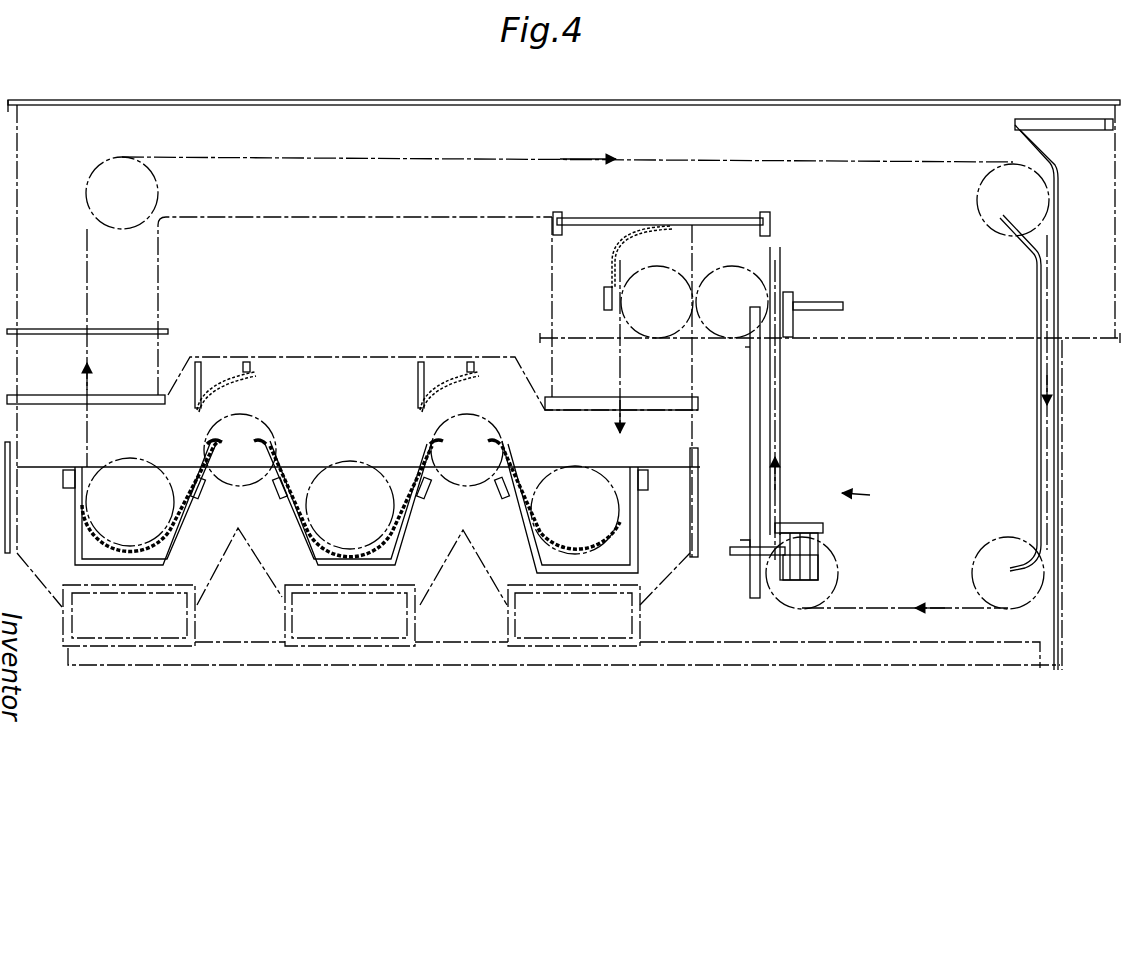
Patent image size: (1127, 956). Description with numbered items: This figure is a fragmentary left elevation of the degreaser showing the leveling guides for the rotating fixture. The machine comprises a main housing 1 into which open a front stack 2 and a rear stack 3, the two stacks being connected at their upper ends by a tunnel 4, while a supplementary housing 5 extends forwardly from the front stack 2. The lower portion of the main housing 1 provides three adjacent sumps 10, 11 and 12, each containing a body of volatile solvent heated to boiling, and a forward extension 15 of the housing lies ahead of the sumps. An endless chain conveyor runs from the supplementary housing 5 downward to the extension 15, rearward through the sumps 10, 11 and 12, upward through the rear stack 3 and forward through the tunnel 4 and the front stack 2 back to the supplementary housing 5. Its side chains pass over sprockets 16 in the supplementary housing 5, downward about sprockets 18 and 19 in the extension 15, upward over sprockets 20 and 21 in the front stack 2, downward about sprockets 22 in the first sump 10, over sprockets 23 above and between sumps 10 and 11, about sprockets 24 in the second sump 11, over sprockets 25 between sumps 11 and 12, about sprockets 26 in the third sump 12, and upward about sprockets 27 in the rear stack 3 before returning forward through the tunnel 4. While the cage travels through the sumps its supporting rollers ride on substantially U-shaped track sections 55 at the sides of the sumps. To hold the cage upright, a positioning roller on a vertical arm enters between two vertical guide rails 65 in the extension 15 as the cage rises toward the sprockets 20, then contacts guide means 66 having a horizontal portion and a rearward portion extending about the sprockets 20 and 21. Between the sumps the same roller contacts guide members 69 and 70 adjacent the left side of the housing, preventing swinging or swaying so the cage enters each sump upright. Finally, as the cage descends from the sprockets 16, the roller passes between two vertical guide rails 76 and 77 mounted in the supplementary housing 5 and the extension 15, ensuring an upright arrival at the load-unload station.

The main housing 1 is at (372, 357).
The front stack 2 is at (552, 297).
The rear stack 3 is at (158, 264).
The tunnel 4 is at (452, 157).
The supplementary housing 5 is at (1060, 583).
The first sump 10 is at (573, 510).
The second sump 11 is at (348, 506).
The third sump 12 is at (127, 503).
The forward extension of housing 15 is at (871, 496).
The sprockets 16 is at (1038, 204).
The sprockets 18 is at (1010, 605).
The sprockets 19 is at (830, 578).
The sprockets 20 is at (731, 268).
The sprockets 21 is at (657, 268).
The sprockets 22 is at (578, 475).
The sprockets 23 is at (478, 428).
The sprockets 24 is at (350, 475).
The sprockets 25 is at (255, 427).
The sprockets 26 is at (160, 523).
The sprockets 27 is at (90, 193).
The U-shaped track sections 55 is at (522, 524).
The vertical guide rails 65 is at (755, 424).
The guide means 66 is at (594, 226).
The guide member 69 is at (448, 375).
The guide member 70 is at (228, 375).
The vertical guide rail 76 is at (1036, 292).
The vertical guide rail 77 is at (1057, 282).